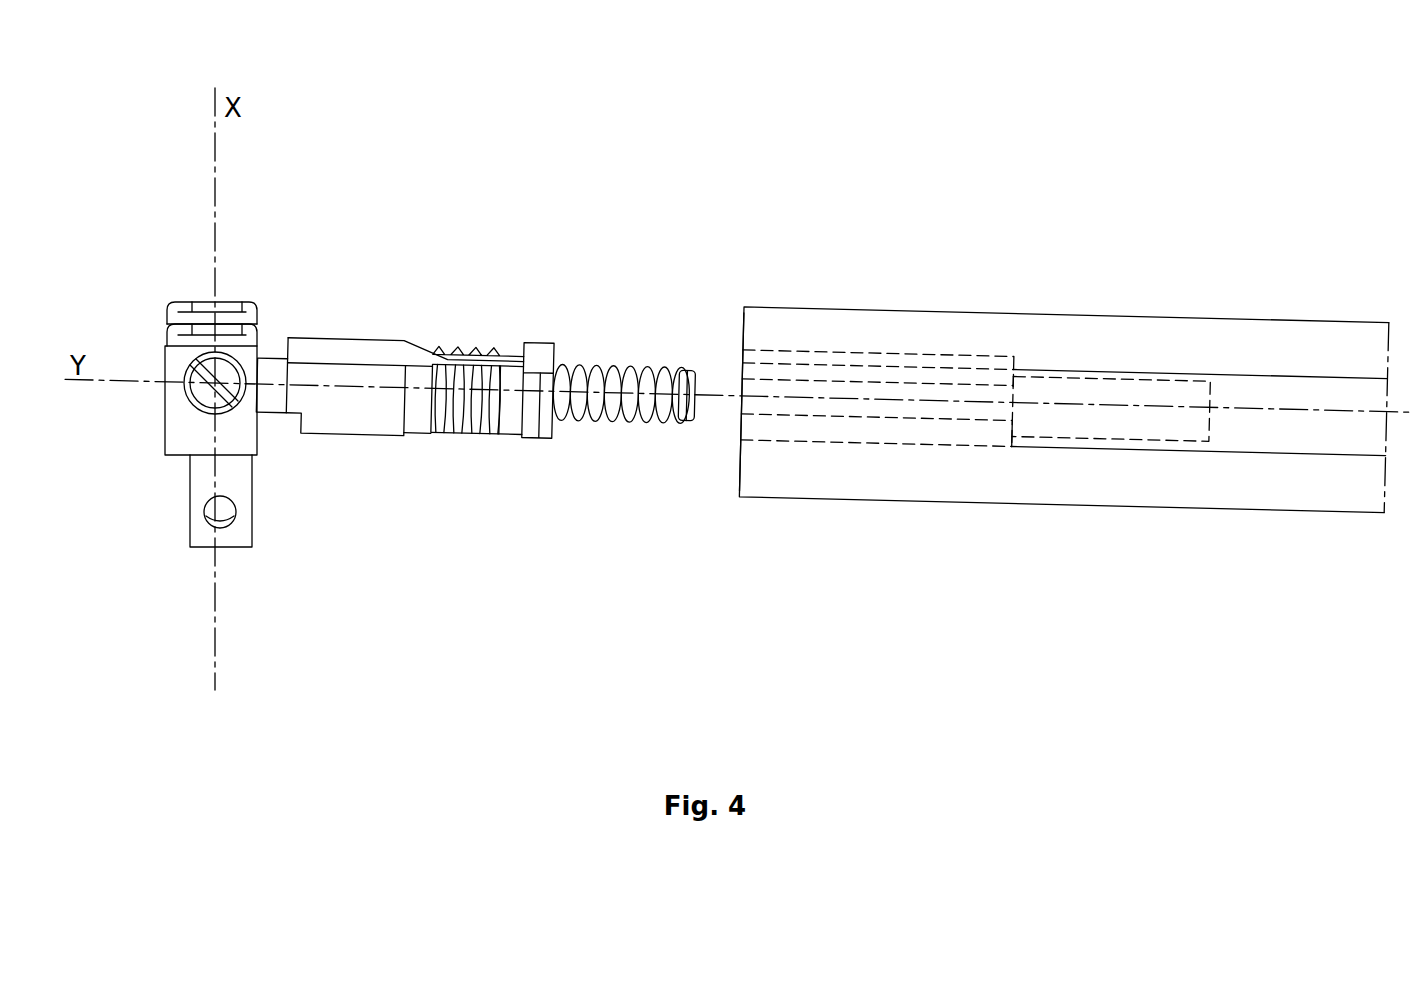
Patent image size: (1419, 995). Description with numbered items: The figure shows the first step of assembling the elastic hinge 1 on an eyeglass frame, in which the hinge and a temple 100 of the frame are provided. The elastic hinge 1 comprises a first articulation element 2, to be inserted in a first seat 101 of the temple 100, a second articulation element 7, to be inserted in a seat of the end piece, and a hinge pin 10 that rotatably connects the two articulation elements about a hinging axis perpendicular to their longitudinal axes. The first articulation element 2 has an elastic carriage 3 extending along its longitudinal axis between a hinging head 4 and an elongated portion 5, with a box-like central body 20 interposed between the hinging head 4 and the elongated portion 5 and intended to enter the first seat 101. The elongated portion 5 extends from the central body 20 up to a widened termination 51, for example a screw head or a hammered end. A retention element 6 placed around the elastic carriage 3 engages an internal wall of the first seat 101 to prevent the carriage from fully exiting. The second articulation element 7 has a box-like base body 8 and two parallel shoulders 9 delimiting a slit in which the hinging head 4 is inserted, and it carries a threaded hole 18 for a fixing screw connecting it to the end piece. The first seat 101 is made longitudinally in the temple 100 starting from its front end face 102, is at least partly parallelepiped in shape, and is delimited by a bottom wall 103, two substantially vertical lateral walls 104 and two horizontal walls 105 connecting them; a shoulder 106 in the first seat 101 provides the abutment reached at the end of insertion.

The elastic hinge 1 is at (338, 212).
The first articulation element 2 is at (465, 293).
The elastic carriage 3 is at (380, 485).
The hinging head 4 is at (267, 348).
The elongated portion 5 is at (611, 370).
The retention element 6 is at (527, 457).
The second articulation element 7 is at (173, 563).
The base body 8 is at (240, 540).
The shoulders 9 is at (172, 333).
The hinge pin 10 is at (193, 400).
The threaded hole 18 is at (205, 521).
The central body 20 is at (358, 350).
The widened termination 51 is at (697, 380).
The temple 100 is at (1323, 343).
The first seat 101 is at (1097, 355).
The front end face 102 is at (740, 450).
The bottom wall 103 is at (1200, 420).
The lateral walls 104 is at (895, 400).
The horizontal walls 105 is at (992, 362).
The shoulder 106 is at (1010, 447).